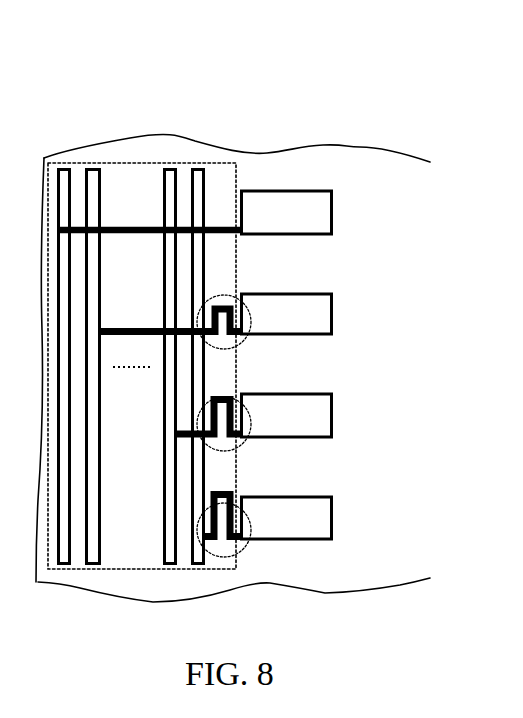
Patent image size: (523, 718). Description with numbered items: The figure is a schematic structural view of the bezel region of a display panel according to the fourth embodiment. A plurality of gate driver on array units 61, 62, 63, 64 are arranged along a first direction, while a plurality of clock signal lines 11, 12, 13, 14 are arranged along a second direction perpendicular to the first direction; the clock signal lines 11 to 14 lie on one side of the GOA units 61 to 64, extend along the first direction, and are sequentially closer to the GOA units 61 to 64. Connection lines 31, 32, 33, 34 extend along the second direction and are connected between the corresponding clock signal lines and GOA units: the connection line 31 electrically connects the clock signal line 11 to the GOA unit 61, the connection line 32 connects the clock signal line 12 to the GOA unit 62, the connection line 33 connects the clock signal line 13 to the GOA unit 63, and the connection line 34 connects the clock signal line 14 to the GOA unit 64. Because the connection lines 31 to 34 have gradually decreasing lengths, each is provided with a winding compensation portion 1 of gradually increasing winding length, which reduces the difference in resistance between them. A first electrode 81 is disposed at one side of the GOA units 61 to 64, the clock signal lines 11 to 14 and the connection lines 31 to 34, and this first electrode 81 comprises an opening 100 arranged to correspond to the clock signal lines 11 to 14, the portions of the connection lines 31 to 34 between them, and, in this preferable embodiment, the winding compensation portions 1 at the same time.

The compensation portion 1 is at (242, 342).
The clock signal line 11 is at (65, 566).
The clock signal line 12 is at (96, 566).
The clock signal line 13 is at (175, 566).
The clock signal line 14 is at (205, 566).
The connection line 31 is at (212, 226).
The connection line 32 is at (225, 297).
The connection line 33 is at (227, 398).
The connection line 34 is at (229, 503).
The GOA unit 61 is at (320, 200).
The GOA unit 62 is at (320, 300).
The GOA unit 63 is at (320, 400).
The GOA unit 64 is at (320, 503).
The first electrode 81 is at (325, 593).
The opening 100 is at (96, 162).